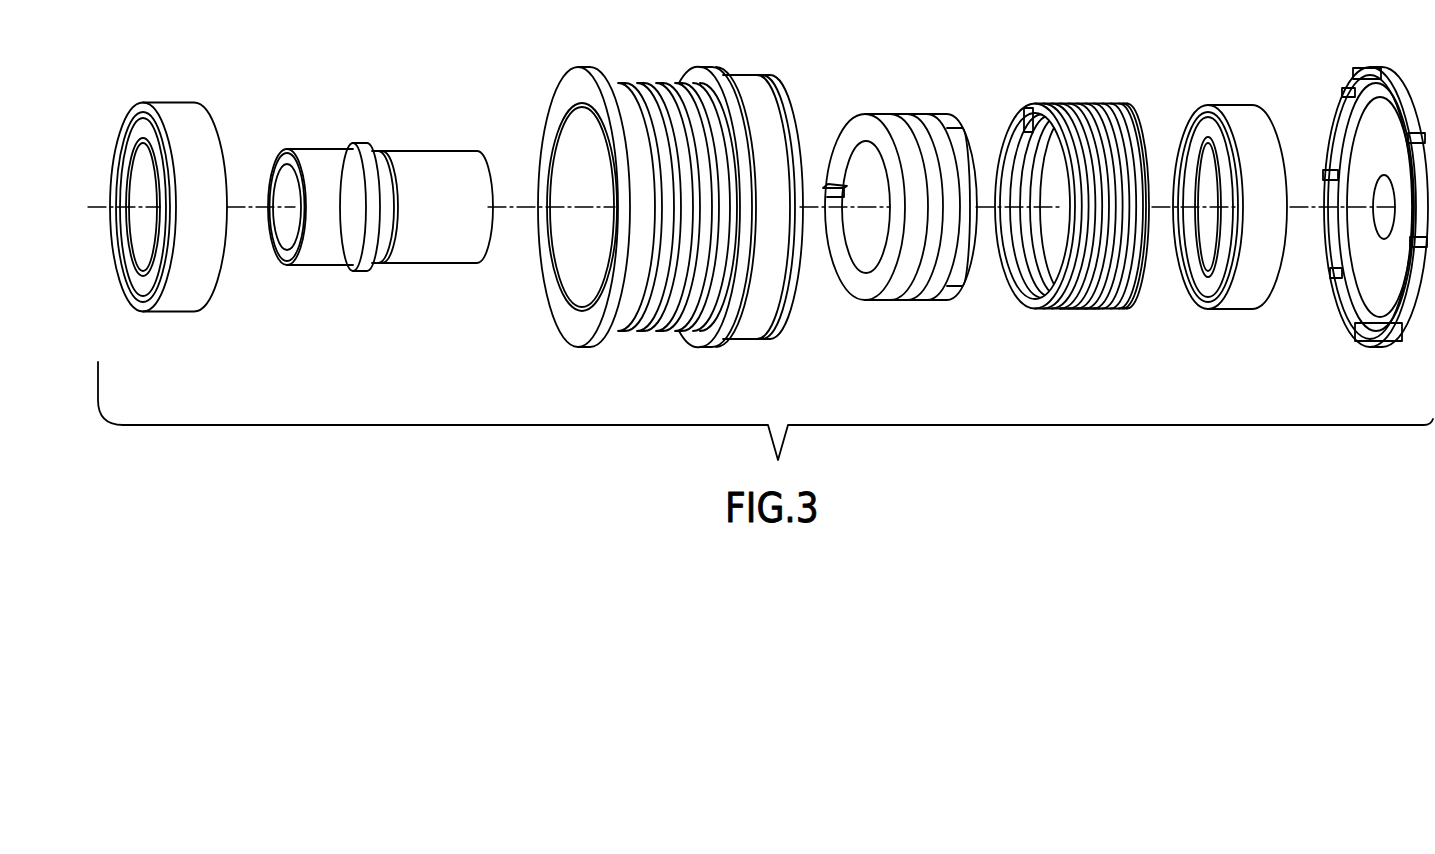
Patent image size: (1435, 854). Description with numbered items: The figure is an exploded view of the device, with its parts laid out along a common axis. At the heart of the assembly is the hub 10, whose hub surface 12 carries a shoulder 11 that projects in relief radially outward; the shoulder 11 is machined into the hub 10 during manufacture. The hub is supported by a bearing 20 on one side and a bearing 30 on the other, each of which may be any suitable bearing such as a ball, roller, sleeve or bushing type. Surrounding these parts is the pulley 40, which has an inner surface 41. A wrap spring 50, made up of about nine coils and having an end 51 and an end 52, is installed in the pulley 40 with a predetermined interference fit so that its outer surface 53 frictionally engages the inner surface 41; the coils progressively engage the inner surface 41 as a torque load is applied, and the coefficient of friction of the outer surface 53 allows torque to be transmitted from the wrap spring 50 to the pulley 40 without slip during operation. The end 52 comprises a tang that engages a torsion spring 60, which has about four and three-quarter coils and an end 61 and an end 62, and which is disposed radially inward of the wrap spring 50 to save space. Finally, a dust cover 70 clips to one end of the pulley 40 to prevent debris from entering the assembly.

The hub 10 is at (327, 147).
The shoulder 11 is at (357, 271).
The hub surface 12 is at (422, 165).
The bearing 20 is at (166, 104).
The bearing 30 is at (1245, 107).
The pulley 40 is at (585, 72).
The inner surface 41 is at (580, 278).
The wrap spring 50 is at (1077, 102).
The end 51 is at (1130, 118).
The end 52 is at (1022, 112).
The outer surface 53 is at (1080, 308).
The torsion spring 60 is at (883, 114).
The end 61 is at (827, 186).
The end 62 is at (952, 126).
The dust cover 70 is at (1373, 65).